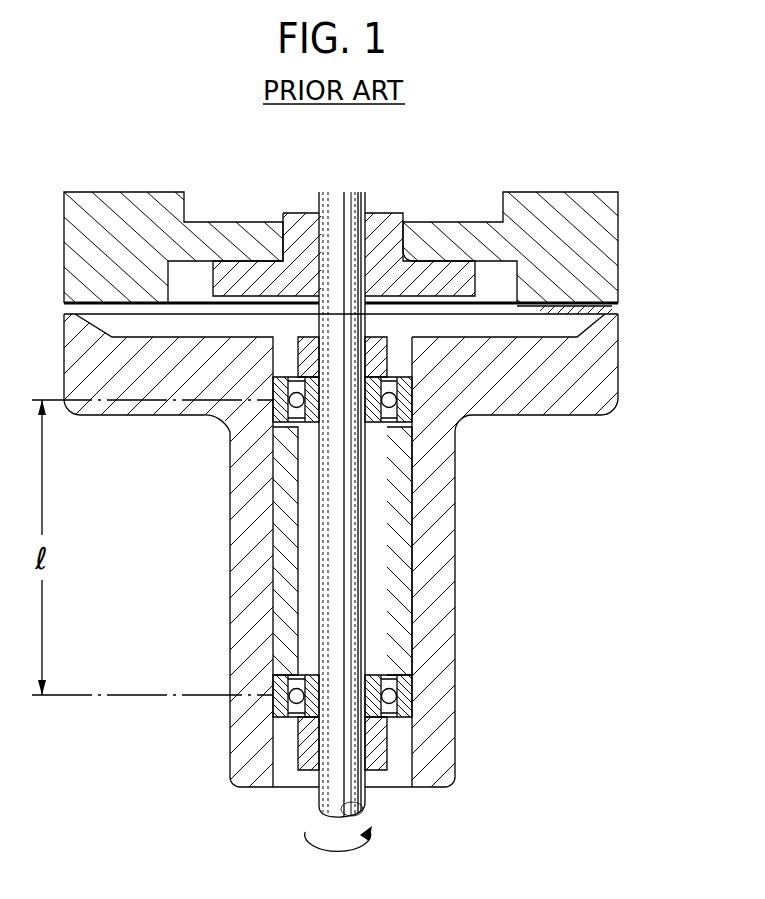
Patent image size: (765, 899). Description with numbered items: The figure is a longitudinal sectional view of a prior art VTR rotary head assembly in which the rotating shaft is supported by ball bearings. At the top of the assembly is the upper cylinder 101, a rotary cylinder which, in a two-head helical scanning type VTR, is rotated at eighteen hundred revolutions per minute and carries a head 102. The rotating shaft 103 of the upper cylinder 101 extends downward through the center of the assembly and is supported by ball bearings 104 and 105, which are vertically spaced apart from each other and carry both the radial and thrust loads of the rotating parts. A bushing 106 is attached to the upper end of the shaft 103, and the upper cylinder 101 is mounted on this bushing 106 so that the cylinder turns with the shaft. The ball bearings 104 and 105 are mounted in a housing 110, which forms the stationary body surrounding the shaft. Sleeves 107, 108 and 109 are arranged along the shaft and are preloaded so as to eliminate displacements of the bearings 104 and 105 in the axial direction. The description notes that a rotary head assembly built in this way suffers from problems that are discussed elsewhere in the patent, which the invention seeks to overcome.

The upper cylinder 101 is at (133, 203).
The head 102 is at (612, 310).
The rotating shaft 103 is at (353, 503).
The ball bearing 104 is at (405, 693).
The ball bearing 105 is at (407, 395).
The bushing 106 is at (303, 212).
The sleeve 107 is at (376, 768).
The sleeve 108 is at (385, 355).
The sleeve 109 is at (403, 566).
The housing 110 is at (165, 402).